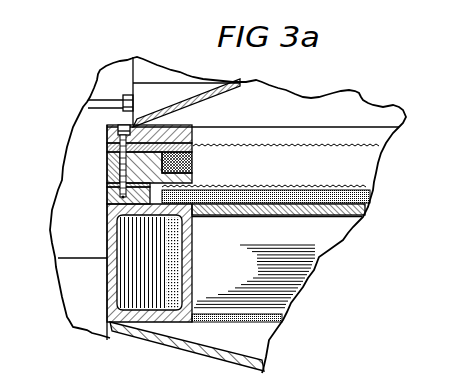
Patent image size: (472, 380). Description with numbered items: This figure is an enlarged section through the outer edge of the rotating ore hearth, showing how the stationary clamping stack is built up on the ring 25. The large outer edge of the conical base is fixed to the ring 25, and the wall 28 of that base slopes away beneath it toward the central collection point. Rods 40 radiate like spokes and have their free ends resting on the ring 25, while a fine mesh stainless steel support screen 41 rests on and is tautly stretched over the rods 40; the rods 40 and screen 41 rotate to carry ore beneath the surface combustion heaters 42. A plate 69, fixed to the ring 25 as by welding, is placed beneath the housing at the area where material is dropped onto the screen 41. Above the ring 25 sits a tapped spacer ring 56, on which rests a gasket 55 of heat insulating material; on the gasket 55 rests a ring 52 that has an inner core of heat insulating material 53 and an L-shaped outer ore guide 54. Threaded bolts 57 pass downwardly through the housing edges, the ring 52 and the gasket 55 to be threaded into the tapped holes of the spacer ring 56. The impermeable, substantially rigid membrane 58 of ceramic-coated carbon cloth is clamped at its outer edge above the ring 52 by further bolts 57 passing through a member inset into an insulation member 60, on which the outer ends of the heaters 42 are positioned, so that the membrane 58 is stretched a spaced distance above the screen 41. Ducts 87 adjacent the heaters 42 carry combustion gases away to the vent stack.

The ring 25 is at (107, 243).
The wall 28 is at (222, 350).
The rods 40 is at (255, 216).
The support screen 41 is at (313, 186).
The surface combustion heaters 42 is at (167, 106).
The ring 52 is at (107, 170).
The heat insulating material 53 is at (172, 160).
The L-shaped outer ore guide 54 is at (192, 177).
The gasket 55 is at (107, 188).
The tapped spacer ring 56 is at (107, 201).
The threaded bolts 57 is at (107, 146).
The impermeable membrane 58 is at (303, 146).
The insulation member 60 is at (190, 136).
The plate 69 is at (297, 216).
The ducts 87 is at (208, 99).